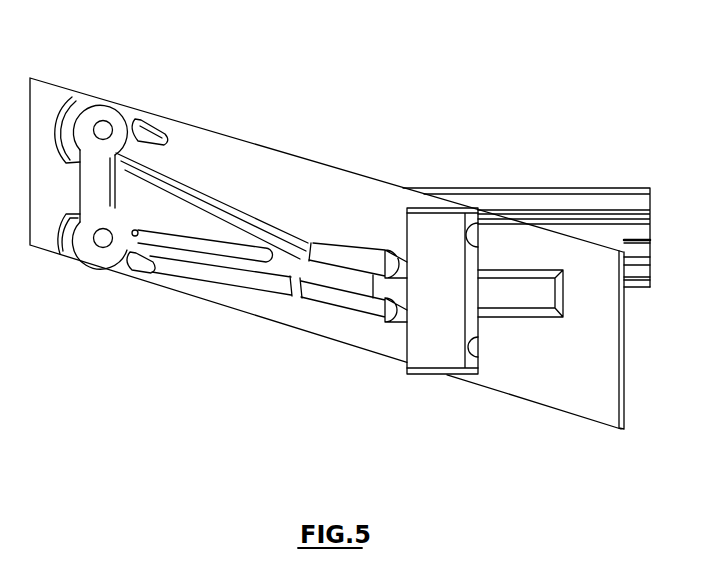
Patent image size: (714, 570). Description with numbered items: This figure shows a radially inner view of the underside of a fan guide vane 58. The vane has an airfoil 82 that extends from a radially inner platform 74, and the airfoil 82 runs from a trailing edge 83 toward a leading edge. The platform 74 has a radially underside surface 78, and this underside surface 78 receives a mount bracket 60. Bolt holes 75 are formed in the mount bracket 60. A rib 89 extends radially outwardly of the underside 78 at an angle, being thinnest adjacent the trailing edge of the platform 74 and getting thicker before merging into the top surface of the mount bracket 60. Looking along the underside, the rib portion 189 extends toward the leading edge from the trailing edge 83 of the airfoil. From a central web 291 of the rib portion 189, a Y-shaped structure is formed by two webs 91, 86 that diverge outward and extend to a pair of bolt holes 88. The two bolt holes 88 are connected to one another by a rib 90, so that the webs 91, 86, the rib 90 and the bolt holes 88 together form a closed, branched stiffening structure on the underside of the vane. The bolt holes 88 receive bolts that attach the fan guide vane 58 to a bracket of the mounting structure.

The fan guide vane 58 is at (608, 82).
The mount bracket 60 is at (447, 296).
The radially inner platform 74 is at (625, 382).
The bolt holes 75 is at (472, 348).
The radially underside surface 78 is at (581, 390).
The airfoil 82 is at (617, 187).
The trailing edge 83 is at (652, 243).
The web 86 is at (231, 205).
The bolt holes 88 is at (135, 122).
The rib 89 is at (535, 293).
The rib 90 is at (102, 180).
The web 91 is at (215, 257).
The rib portion 189 is at (343, 276).
The central web 291 is at (290, 268).